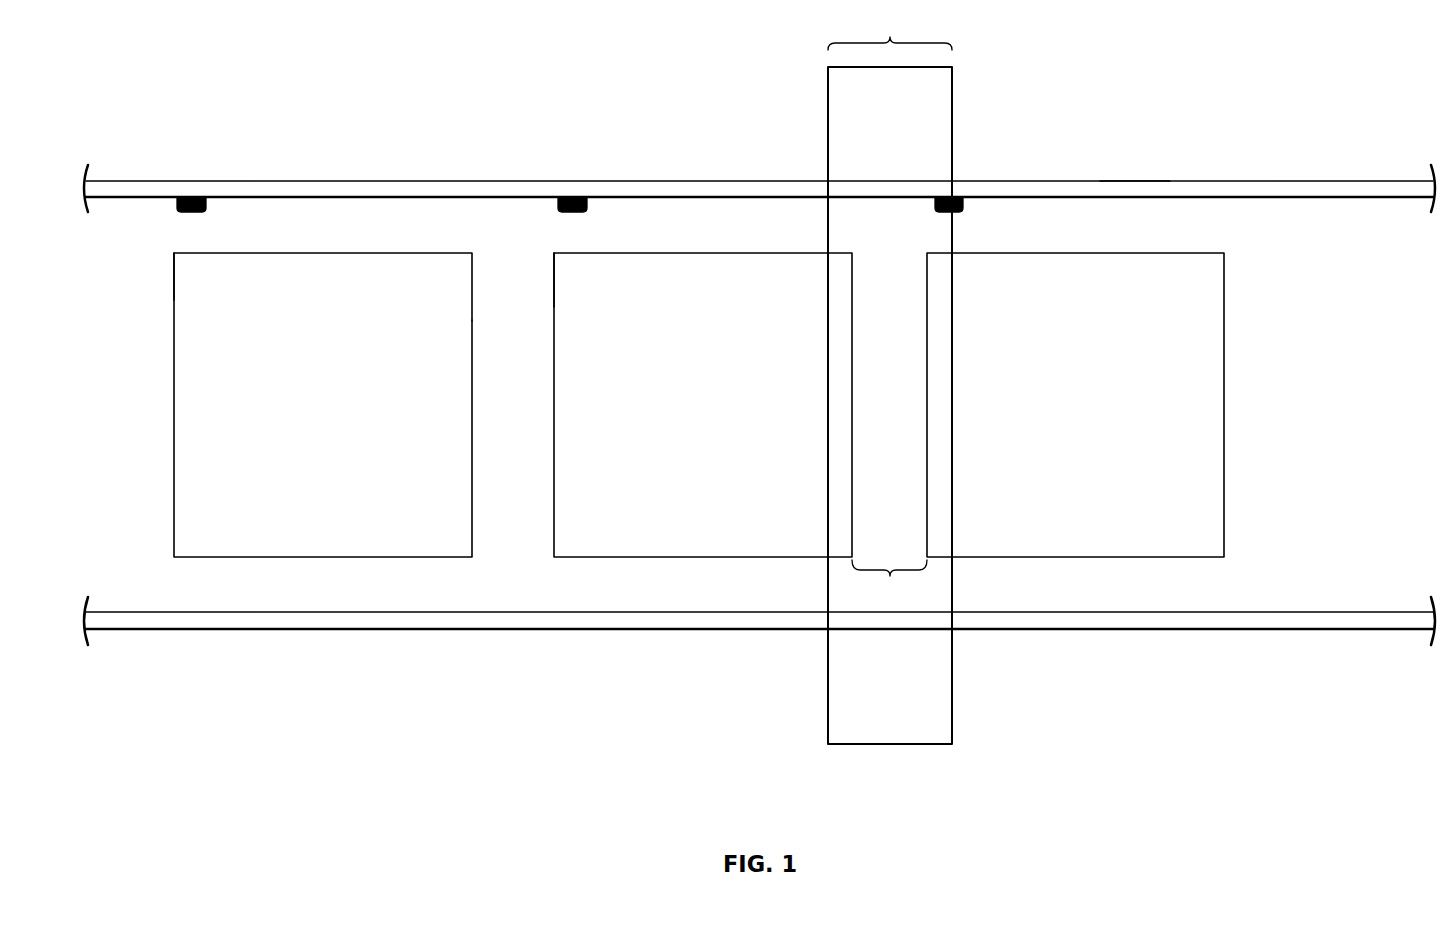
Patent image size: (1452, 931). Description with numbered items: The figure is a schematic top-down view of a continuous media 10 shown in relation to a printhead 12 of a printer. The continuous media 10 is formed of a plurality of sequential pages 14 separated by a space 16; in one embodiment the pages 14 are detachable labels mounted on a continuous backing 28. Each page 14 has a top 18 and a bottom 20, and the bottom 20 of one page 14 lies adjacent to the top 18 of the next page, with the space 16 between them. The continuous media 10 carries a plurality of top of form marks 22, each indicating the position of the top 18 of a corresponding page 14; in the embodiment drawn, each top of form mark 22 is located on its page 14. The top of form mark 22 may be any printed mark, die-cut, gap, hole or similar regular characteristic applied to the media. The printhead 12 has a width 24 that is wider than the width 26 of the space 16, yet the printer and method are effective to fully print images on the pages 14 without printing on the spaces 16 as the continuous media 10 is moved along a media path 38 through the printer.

The continuous media 10 is at (188, 578).
The printhead 12 is at (868, 720).
The page 14 is at (375, 540).
The space 16 is at (512, 513).
The top of page 18 is at (472, 320).
The bottom of page 20 is at (174, 300).
The top of form mark 22 is at (193, 197).
The printhead width 24 is at (890, 29).
The space width 26 is at (890, 576).
The continuous backing 28 is at (1292, 215).
The media path 38 is at (1134, 190).